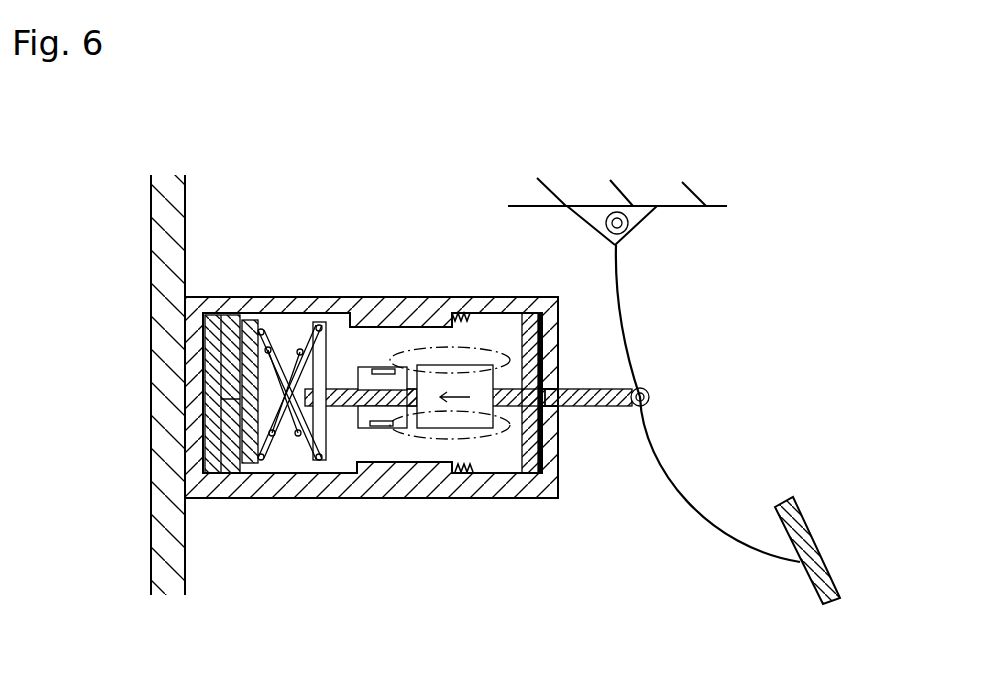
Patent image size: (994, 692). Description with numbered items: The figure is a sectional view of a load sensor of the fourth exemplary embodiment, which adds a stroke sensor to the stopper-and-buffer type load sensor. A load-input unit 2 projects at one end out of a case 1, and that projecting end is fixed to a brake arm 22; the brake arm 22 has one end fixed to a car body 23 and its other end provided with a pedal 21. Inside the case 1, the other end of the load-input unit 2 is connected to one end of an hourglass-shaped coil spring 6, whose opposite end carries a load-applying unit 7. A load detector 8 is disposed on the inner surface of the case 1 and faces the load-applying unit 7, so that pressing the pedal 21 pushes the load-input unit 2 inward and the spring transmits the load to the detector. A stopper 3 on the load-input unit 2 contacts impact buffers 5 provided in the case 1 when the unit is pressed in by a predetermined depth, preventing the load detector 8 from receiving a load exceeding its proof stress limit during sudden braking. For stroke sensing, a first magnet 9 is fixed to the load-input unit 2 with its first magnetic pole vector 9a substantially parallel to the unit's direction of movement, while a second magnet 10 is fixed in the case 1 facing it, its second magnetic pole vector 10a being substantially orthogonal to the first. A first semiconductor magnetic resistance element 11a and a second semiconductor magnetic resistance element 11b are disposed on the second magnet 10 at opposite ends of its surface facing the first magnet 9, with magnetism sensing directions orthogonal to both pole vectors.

The case 1 is at (537, 487).
The load-input unit 2 is at (593, 400).
The stopper 3 is at (527, 322).
The impact buffers 5 is at (462, 318).
The hourglass-shaped coil spring 6 is at (303, 455).
The load-applying unit 7 is at (245, 455).
The load detector 8 is at (228, 325).
The first magnet 9 is at (428, 368).
The first magnetic pole vector 9a is at (456, 388).
The second magnet 10 is at (364, 405).
The second magnetic pole vector 10a is at (395, 425).
The first semiconductor magnetic resistance element 11a is at (383, 422).
The second semiconductor magnetic resistance element 11b is at (378, 392).
The pedal 21 is at (823, 553).
The brake arm 22 is at (703, 510).
The car body 23 is at (163, 357).